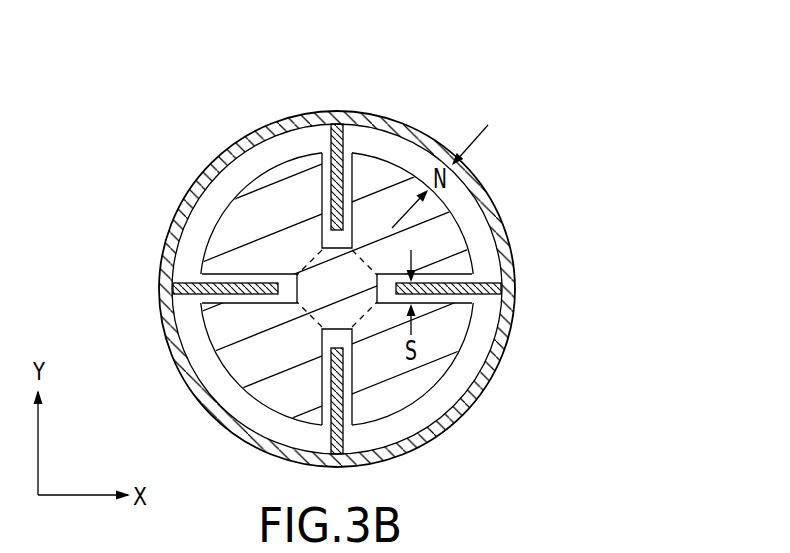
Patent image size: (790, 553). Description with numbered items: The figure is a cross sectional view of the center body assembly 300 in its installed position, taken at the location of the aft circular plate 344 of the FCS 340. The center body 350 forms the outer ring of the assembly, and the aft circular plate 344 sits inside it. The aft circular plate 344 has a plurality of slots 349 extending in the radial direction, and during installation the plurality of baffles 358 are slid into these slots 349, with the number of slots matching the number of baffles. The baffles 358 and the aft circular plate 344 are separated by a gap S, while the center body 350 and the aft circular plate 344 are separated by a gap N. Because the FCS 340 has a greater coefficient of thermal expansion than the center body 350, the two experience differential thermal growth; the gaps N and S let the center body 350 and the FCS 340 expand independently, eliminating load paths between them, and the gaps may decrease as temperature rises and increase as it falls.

The center body assembly 300 is at (540, 85).
The FCS 340 is at (263, 173).
The aft circular plate 344 is at (435, 237).
The slots 349 is at (452, 303).
The center body 350 is at (364, 111).
The baffles 358 is at (474, 282).